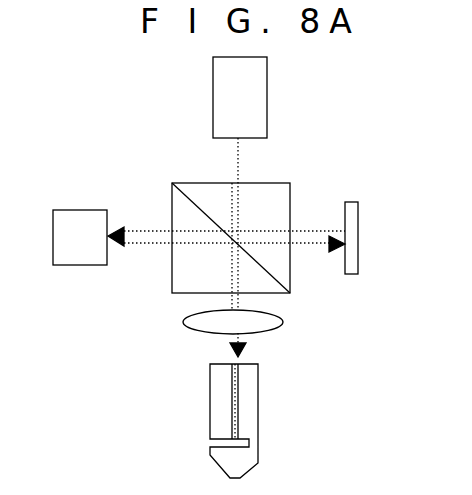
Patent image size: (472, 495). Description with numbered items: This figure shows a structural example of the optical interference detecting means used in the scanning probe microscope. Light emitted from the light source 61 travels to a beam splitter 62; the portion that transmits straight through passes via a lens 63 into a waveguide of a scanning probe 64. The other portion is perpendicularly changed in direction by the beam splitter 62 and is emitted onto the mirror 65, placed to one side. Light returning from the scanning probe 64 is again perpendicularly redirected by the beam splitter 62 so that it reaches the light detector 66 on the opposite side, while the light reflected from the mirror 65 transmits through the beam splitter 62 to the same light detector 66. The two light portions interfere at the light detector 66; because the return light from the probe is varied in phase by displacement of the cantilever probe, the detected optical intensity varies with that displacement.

The light source 61 is at (253, 102).
The beam splitter 62 is at (192, 198).
The lens 63 is at (270, 322).
The scanning probe 64 is at (250, 395).
The mirror 65 is at (352, 223).
The light detector 66 is at (78, 230).